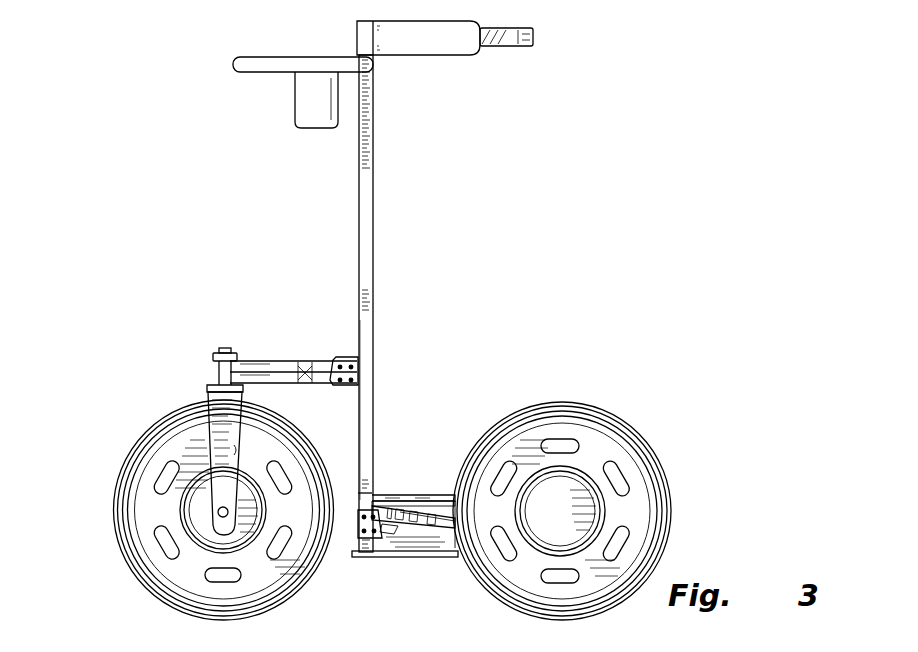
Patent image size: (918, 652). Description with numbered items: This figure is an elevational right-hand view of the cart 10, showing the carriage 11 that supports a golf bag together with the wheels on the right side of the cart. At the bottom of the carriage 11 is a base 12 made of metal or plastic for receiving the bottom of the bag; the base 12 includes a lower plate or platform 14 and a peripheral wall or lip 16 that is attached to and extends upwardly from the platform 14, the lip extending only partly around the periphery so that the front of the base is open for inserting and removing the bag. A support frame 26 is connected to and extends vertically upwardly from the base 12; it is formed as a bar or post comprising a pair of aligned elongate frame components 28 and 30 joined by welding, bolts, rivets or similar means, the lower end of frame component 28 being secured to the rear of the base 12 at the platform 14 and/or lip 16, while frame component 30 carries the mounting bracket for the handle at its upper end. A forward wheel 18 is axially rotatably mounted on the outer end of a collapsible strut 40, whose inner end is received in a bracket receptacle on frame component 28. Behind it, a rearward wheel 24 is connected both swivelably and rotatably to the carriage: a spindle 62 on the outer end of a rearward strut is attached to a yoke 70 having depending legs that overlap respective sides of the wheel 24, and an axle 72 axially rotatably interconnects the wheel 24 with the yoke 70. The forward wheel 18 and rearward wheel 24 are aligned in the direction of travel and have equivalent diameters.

The cart 10 is at (262, 205).
The carriage 11 is at (386, 141).
The base 12 is at (431, 478).
The platform 14 is at (383, 558).
The lip 16 is at (398, 496).
The forward wheel 18 is at (656, 452).
The rearward wheel 24 is at (123, 477).
The support frame 26 is at (373, 302).
The frame component 28 is at (374, 407).
The frame component 30 is at (373, 215).
The collapsible strut 40 is at (447, 497).
The spindle 62 is at (225, 350).
The yoke 70 is at (224, 425).
The axle 72 is at (219, 519).